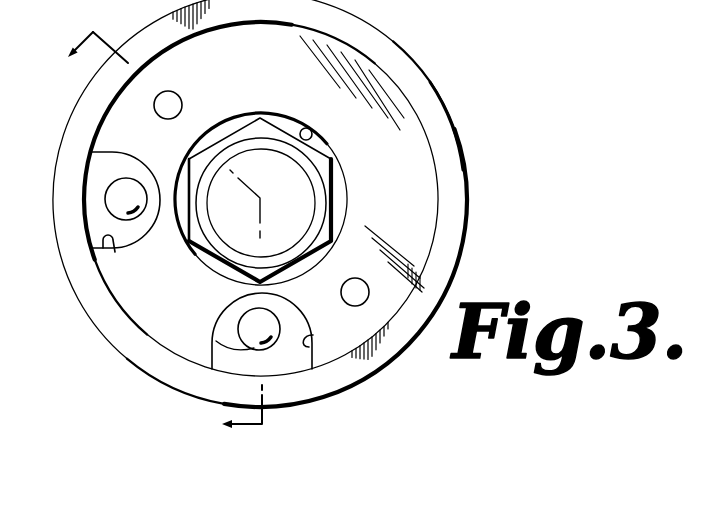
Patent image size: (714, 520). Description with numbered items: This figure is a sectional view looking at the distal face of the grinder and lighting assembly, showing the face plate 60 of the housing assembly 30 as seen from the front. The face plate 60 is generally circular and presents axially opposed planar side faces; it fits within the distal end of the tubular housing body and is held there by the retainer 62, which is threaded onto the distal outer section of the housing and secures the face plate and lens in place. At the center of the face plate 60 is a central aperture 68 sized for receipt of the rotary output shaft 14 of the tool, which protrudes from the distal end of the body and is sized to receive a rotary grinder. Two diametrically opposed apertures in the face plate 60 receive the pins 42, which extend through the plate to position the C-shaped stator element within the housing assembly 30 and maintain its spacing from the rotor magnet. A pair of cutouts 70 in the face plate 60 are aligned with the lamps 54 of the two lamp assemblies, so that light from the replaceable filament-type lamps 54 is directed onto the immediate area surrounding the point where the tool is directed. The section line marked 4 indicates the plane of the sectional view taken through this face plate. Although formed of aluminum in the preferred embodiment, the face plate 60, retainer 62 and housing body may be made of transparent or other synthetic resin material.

The section line 4- 4 is at (177, 227).
The rotary output shaft 14 is at (340, 183).
The housing assembly 30 is at (426, 68).
The pins 42 is at (166, 108).
The filament-type lamp 54 is at (118, 199).
The face plate 60 is at (262, 85).
The retainer 62 is at (448, 137).
The central aperture 68 is at (312, 129).
The cutouts 70 is at (115, 251).